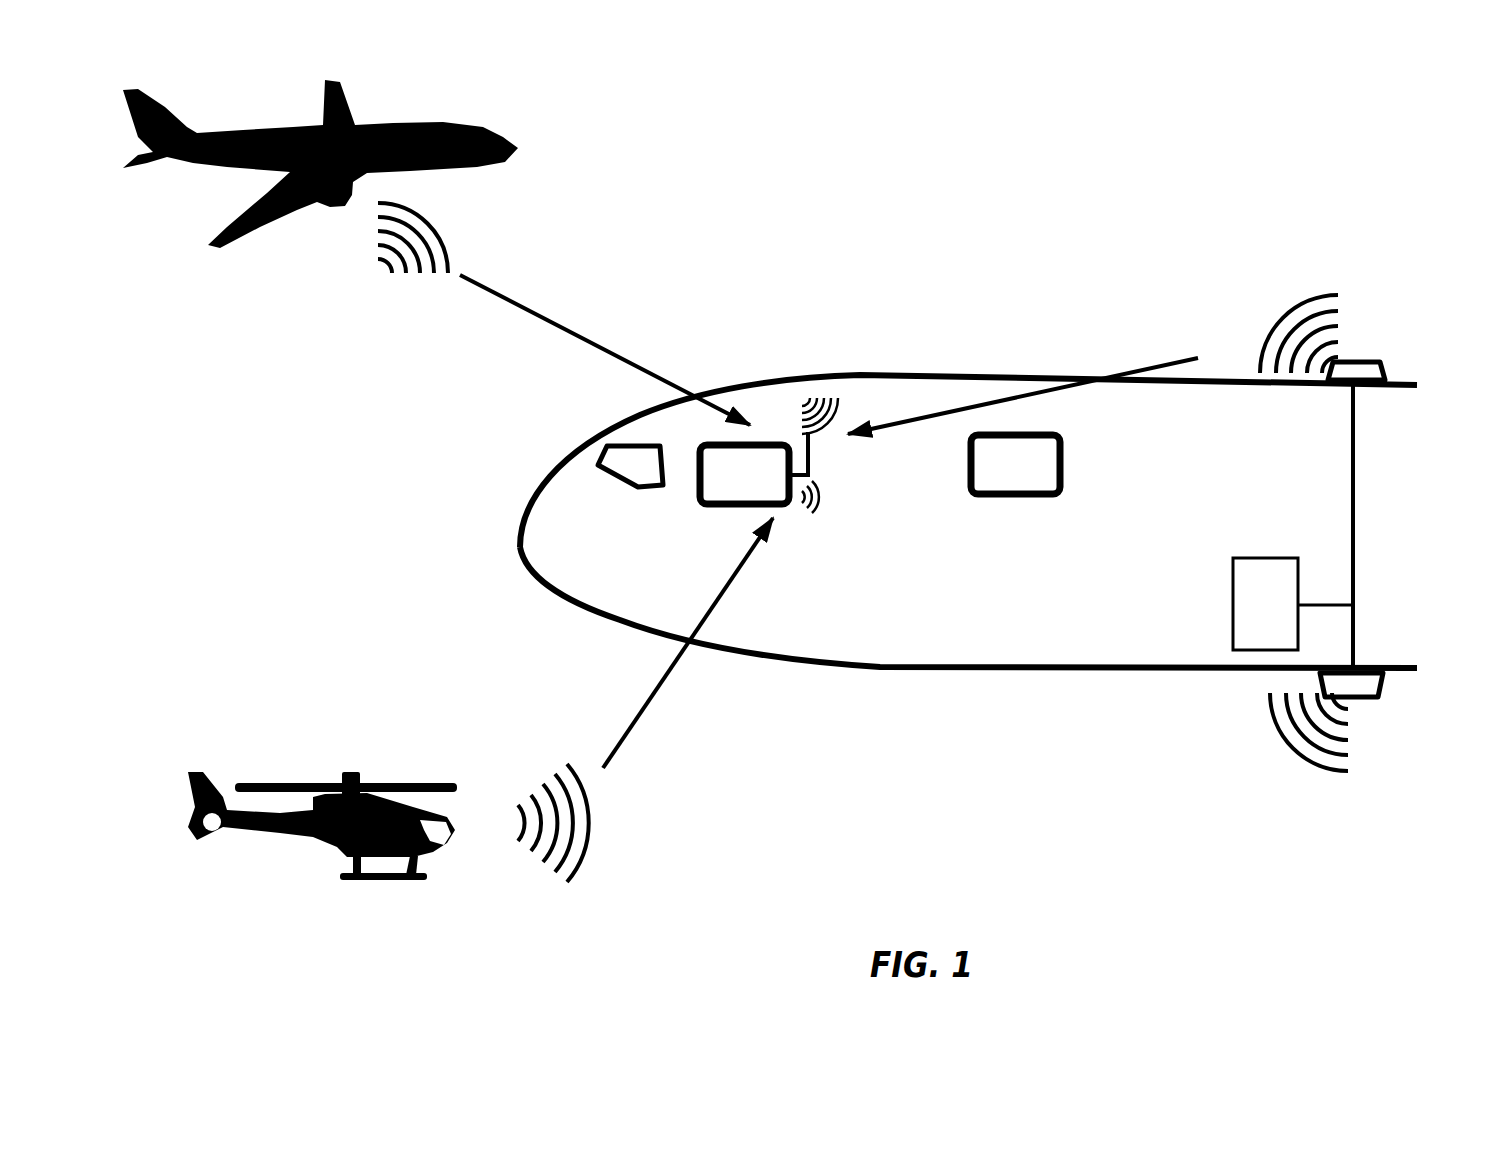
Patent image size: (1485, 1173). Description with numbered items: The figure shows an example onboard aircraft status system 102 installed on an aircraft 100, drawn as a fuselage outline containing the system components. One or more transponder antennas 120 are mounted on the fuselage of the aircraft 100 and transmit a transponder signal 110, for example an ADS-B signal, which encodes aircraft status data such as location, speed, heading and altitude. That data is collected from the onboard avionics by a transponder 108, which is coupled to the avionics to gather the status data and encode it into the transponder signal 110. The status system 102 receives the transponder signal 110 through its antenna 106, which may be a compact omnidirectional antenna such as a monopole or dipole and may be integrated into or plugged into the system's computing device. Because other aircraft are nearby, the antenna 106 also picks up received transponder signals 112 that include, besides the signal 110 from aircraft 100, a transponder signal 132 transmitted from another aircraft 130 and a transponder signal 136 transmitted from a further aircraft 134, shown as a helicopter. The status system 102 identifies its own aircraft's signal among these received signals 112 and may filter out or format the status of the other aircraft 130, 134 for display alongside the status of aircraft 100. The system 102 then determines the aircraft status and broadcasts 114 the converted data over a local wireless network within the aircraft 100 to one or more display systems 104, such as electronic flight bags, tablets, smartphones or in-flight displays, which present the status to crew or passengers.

The aircraft 100 is at (907, 656).
The aircraft status system 102 is at (702, 507).
The display system 104 is at (1062, 460).
The antenna 106 is at (808, 432).
The transponder 108 is at (1279, 635).
The transponder signal 110 is at (1262, 328).
The received transponder signals 112 is at (838, 405).
The broadcast of data 114 is at (825, 508).
The transponder antenna 120 is at (1386, 368).
The other aircraft 130 is at (503, 120).
The transponder signal of other aircraft 132 is at (452, 247).
The other aircraft 134 is at (325, 724).
The transponder signal of other aircraft 136 is at (600, 823).